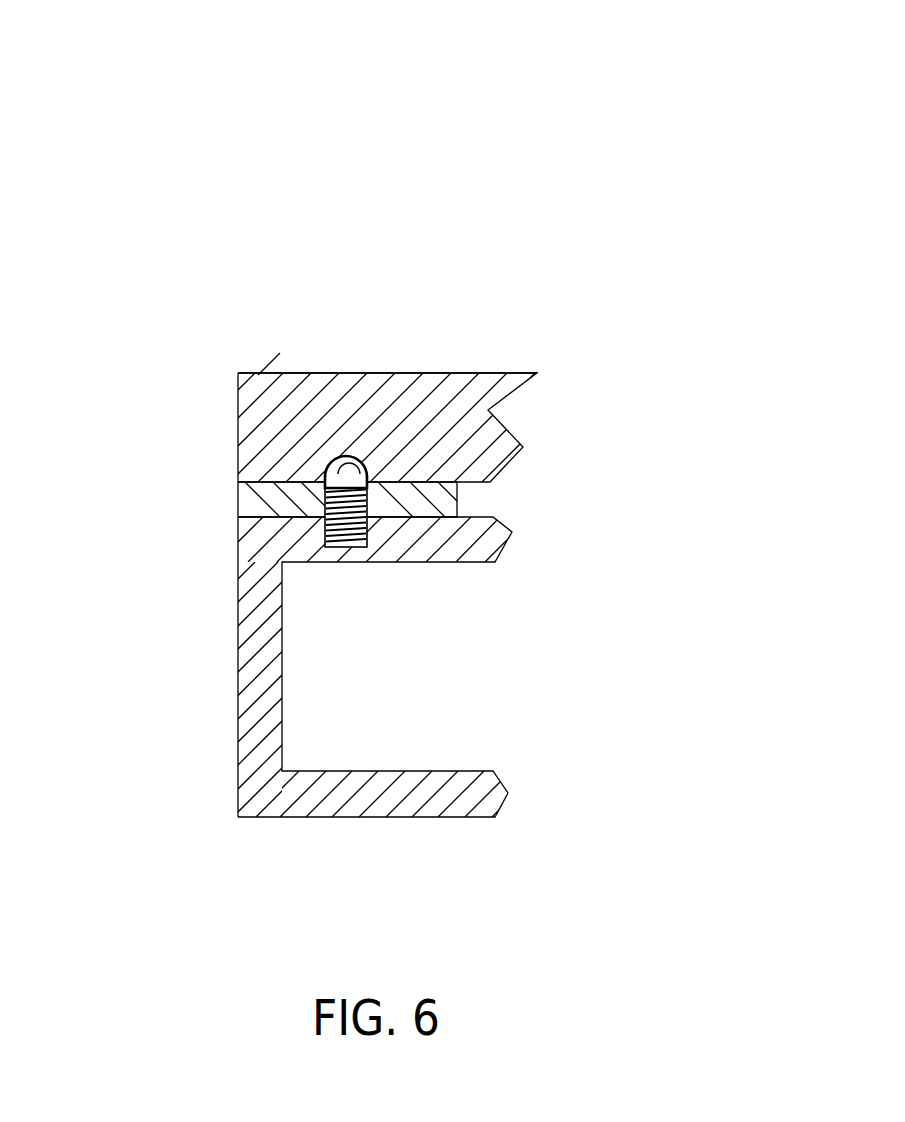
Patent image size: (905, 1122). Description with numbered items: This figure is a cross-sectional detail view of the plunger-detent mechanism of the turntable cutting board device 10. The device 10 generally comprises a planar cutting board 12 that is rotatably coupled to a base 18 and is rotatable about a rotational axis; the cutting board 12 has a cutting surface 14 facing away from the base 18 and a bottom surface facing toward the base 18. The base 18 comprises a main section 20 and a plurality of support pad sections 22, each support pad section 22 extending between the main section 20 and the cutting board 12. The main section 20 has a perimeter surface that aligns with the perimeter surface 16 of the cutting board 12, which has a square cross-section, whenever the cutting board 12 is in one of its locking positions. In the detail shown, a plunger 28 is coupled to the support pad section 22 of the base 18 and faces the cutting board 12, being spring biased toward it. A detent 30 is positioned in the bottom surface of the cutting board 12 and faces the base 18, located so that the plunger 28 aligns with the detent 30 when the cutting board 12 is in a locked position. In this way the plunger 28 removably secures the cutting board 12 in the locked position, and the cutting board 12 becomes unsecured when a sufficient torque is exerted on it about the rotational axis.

The turntable cutting board device 10 is at (412, 128).
The cutting board 12 is at (455, 388).
The cutting surface 14 is at (283, 373).
The perimeter surface 16 is at (238, 427).
The base 18 is at (238, 647).
The main section 20 is at (358, 817).
The support pad section 22 is at (270, 497).
The plunger 28 is at (345, 528).
The detent 30 is at (346, 457).